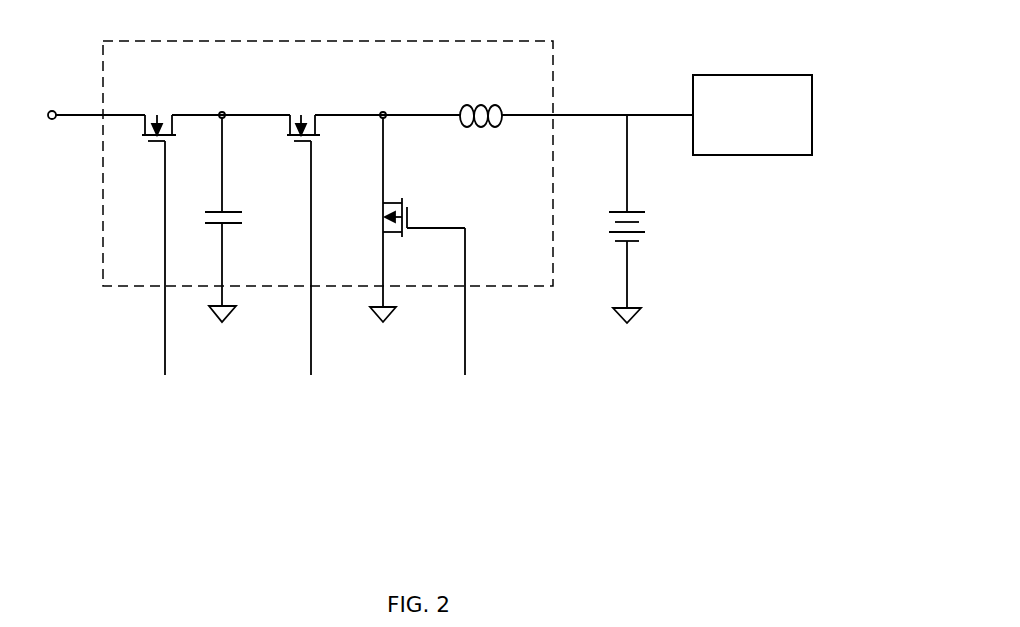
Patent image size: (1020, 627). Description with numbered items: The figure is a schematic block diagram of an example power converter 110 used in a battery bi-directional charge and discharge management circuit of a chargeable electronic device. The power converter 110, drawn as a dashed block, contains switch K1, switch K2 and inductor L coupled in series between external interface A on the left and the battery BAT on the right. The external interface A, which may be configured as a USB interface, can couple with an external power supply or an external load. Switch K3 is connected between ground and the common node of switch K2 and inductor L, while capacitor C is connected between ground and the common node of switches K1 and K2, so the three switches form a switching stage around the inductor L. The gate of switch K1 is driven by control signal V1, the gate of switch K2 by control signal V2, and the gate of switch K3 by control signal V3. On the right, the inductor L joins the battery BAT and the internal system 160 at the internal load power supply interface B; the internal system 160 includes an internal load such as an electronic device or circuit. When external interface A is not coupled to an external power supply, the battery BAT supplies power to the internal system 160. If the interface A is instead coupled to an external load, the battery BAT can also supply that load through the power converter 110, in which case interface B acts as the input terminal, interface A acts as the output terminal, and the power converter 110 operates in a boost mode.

The power converter 110 is at (243, 72).
The internal system 160 is at (812, 113).
The external interface A is at (94, 97).
The internal load power supply interface B is at (657, 121).
The switch K1 is at (216, 121).
The switch K2 is at (373, 121).
The switch K3 is at (417, 217).
The capacitor C is at (235, 217).
The inductor L is at (543, 96).
The battery BAT is at (657, 241).
The first control voltage V1 is at (169, 286).
The second control voltage V2 is at (314, 286).
The third control voltage V3 is at (466, 320).